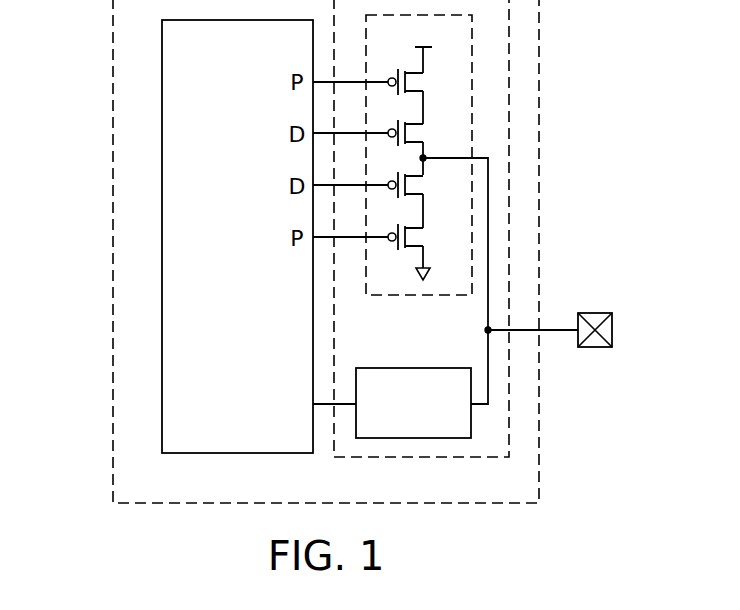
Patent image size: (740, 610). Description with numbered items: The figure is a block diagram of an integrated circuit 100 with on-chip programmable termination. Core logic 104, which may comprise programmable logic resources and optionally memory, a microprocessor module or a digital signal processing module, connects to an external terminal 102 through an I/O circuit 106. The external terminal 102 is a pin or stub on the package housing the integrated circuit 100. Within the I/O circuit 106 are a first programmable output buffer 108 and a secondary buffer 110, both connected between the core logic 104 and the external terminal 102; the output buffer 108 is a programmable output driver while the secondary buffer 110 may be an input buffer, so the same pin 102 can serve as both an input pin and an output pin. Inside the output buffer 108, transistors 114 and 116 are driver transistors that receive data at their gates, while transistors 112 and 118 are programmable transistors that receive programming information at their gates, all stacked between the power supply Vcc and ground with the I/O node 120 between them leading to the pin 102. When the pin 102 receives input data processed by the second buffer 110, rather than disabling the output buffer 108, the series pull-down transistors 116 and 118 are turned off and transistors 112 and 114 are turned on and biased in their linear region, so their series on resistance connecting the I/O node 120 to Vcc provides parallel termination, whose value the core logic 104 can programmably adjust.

The integrated circuit 100 is at (110, 67).
The external terminal 102 is at (596, 313).
The core logic 104 is at (253, 285).
The I/O circuit 106 is at (378, 458).
The first programmable output buffer 108 is at (472, 31).
The secondary buffer 110 is at (374, 368).
The programmable transistor 112 is at (413, 80).
The driver transistor 114 is at (413, 131).
The driver transistor 116 is at (413, 183).
The programmable transistor 118 is at (413, 235).
The I/O node 120 is at (488, 330).